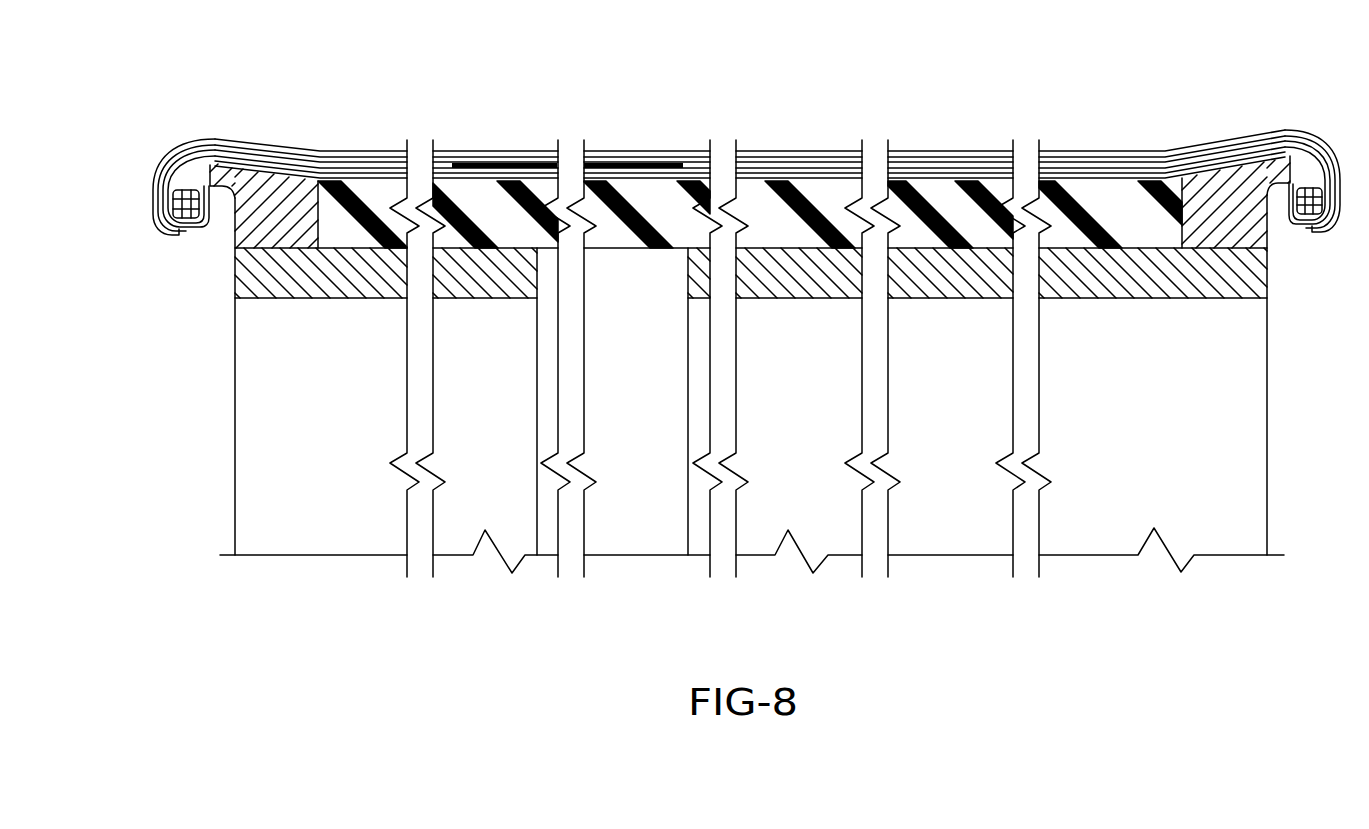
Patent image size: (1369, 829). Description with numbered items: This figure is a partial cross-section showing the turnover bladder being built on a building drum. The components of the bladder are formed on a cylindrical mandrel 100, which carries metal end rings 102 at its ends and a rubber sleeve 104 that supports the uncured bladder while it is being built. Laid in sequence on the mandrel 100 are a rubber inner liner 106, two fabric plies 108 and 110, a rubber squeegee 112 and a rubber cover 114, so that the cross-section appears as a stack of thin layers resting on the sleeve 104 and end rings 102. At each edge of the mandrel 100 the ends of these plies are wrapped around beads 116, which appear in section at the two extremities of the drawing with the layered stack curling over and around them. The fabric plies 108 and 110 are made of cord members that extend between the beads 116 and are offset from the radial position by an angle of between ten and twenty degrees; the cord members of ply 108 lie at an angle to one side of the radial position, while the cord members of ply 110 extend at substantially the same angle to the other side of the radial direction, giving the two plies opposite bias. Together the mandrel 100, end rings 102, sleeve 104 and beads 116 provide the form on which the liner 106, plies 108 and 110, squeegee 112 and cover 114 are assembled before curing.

The cylindrical mandrel 100 is at (1272, 428).
The metal end rings 102 is at (268, 240).
The rubber sleeve 104 is at (511, 238).
The rubber inner liner 106 is at (752, 177).
The fabric ply 108 is at (895, 170).
The fabric ply 110 is at (978, 158).
The rubber squeegee 112 is at (645, 165).
The rubber cover 114 is at (531, 155).
The beads 116 is at (186, 218).